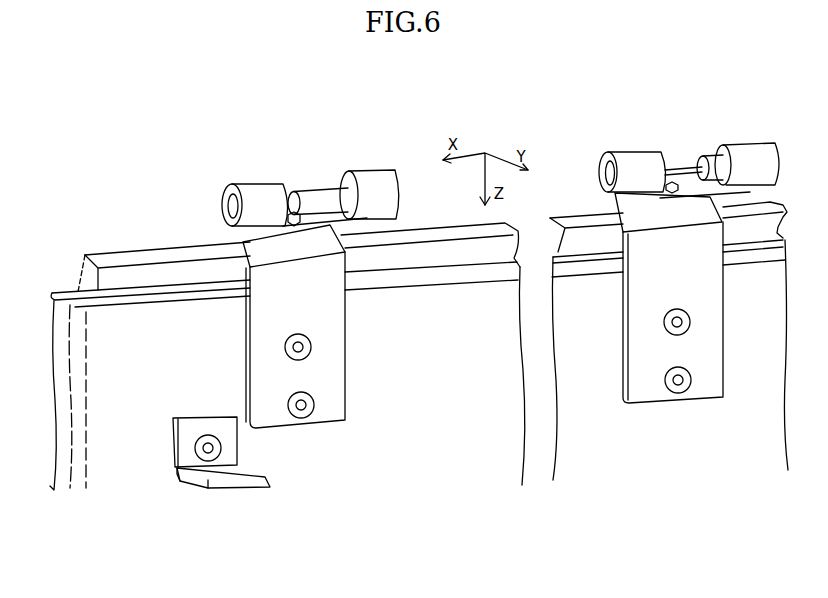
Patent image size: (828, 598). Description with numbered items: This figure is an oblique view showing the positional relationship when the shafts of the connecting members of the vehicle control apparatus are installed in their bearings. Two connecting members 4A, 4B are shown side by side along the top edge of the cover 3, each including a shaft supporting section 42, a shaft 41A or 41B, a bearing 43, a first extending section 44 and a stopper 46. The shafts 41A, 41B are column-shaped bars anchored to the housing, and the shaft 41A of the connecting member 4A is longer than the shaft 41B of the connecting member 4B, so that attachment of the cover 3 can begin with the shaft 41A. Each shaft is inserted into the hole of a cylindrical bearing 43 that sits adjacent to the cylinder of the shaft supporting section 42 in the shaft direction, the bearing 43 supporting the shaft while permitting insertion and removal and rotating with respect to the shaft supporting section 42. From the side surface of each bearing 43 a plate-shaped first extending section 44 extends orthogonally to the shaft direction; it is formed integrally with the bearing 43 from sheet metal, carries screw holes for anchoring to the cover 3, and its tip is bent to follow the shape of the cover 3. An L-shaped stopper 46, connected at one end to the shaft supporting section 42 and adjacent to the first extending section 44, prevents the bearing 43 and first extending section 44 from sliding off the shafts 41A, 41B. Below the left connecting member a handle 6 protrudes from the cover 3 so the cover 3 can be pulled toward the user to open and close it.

The cover 3 is at (465, 468).
The connecting member 4A is at (253, 178).
The connecting member 4B is at (639, 148).
The shaft 41A is at (318, 190).
The shaft 41B is at (698, 160).
The shaft supporting section 42 is at (376, 188).
The bearing 43 is at (241, 230).
The first extending section 44 is at (252, 243).
The stopper 46 is at (293, 212).
The handle 6 is at (243, 488).